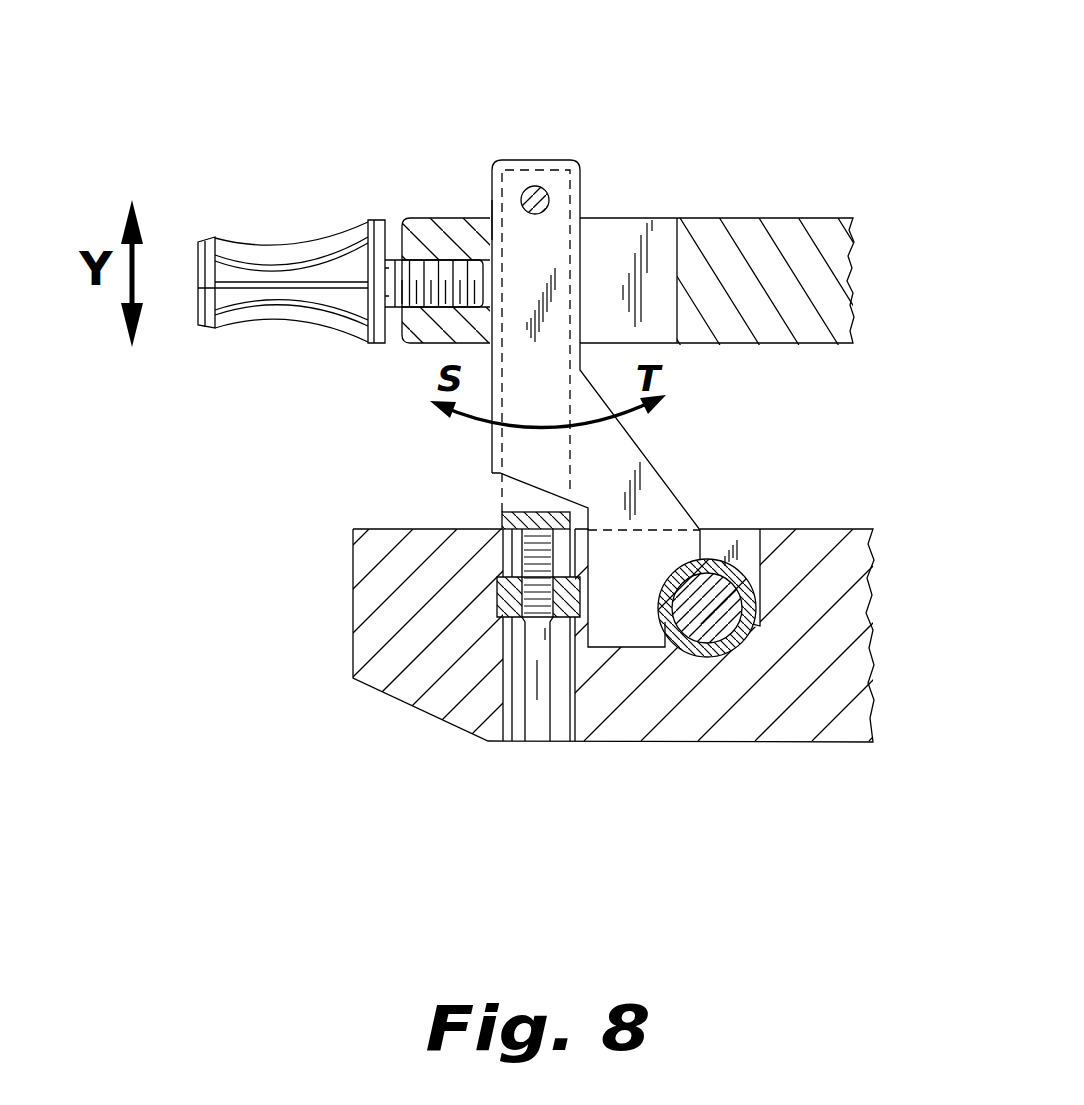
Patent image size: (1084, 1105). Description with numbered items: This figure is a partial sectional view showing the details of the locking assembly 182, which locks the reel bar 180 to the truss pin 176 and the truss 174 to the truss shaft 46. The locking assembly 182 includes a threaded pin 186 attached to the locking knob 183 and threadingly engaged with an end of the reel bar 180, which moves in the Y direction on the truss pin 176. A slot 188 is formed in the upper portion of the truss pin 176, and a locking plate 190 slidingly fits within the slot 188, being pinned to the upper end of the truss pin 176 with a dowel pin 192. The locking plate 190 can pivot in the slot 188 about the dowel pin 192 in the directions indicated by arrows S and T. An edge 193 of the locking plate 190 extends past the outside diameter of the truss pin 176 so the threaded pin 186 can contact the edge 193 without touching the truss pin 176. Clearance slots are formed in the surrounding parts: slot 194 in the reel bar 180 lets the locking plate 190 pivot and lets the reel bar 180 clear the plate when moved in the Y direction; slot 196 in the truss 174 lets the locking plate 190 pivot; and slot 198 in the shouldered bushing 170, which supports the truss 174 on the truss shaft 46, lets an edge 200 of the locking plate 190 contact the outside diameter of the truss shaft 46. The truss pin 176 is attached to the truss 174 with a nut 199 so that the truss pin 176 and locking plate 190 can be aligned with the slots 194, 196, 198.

The truss shaft 46 is at (703, 608).
The shouldered bushing 170 is at (750, 633).
The truss 174 is at (847, 742).
The truss pin 176 is at (516, 158).
The reel bar 180 is at (828, 218).
The locking assembly 182 is at (446, 94).
The locking knob 183 is at (252, 238).
The threaded pin 186 is at (437, 292).
The slot 188 is at (507, 497).
The locking plate 190 is at (543, 245).
The dowel pin 192 is at (550, 190).
The edge 193 is at (488, 200).
The slot 194 is at (657, 243).
The slot 196 is at (717, 547).
The slot 198 is at (653, 628).
The nut 199 is at (510, 617).
The edge 200 is at (664, 588).